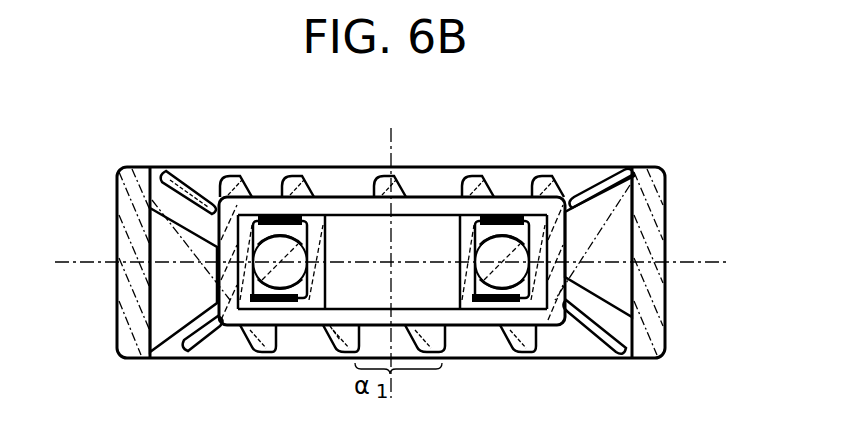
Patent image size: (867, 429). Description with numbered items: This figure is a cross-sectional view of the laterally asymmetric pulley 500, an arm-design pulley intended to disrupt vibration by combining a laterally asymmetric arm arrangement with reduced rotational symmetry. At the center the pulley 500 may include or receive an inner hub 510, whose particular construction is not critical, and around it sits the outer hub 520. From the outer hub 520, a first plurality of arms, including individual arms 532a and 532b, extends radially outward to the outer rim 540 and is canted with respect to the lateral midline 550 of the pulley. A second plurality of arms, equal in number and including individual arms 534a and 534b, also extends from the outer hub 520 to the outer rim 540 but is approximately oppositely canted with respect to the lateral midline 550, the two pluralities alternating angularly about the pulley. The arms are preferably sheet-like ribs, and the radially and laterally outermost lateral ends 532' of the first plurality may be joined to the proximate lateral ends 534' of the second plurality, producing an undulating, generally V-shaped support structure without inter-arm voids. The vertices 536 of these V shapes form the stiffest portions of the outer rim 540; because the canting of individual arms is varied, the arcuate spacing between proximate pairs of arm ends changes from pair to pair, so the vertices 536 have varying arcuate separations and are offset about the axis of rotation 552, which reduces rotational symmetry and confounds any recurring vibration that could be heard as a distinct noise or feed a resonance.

The laterally asymmetric pulley 500 is at (52, 116).
The inner hub 510 is at (510, 207).
The outer hub 520 is at (560, 195).
The lateral end of first-plurality arm 532' is at (231, 370).
The first-plurality arm 532a is at (448, 343).
The first-plurality arm 532b is at (335, 343).
The lateral end of second-plurality arm 534' is at (153, 364).
The second-plurality arm 534a is at (402, 343).
The second-plurality arm 534b is at (322, 343).
The vertex 536 is at (233, 168).
The outer rim 540 is at (643, 202).
The lateral midline 550 is at (416, 263).
The axis of rotation 552 is at (405, 247).